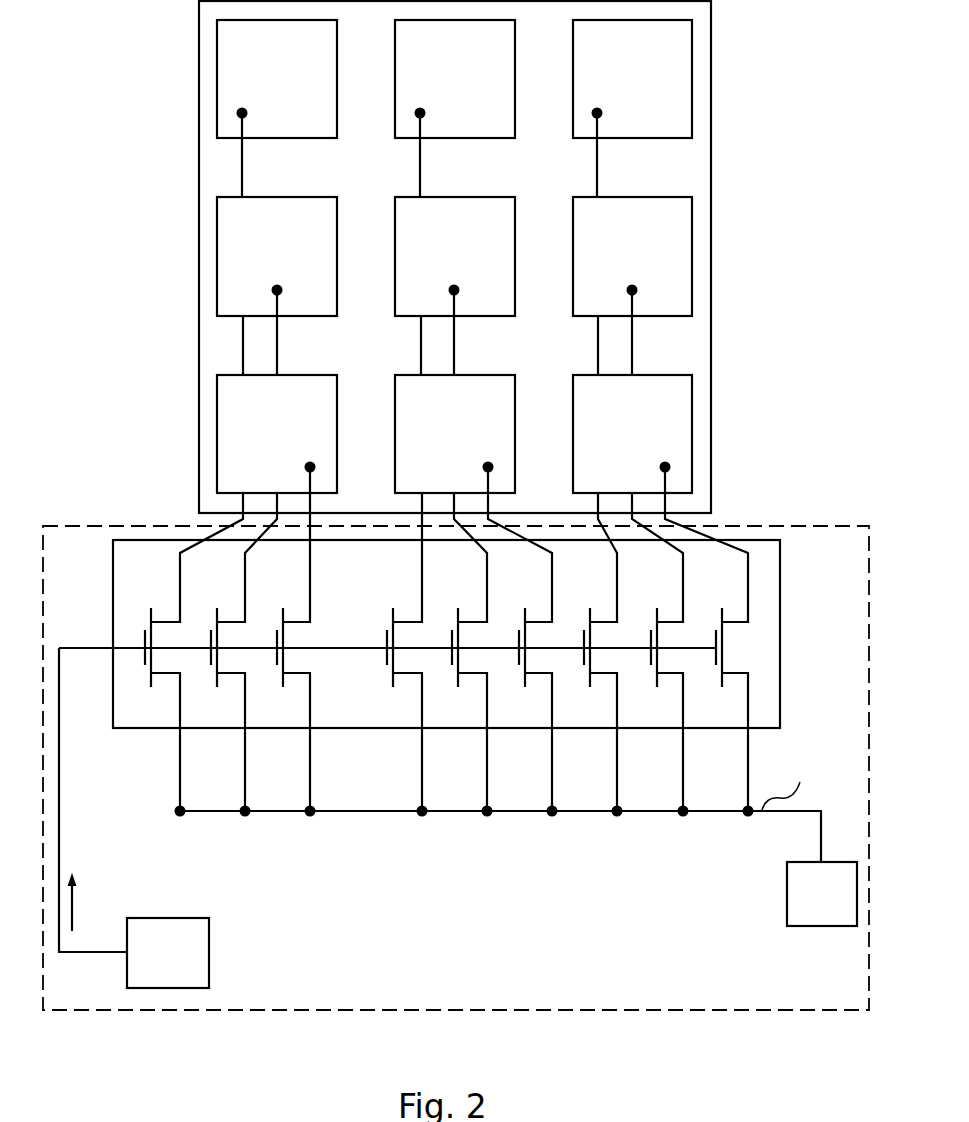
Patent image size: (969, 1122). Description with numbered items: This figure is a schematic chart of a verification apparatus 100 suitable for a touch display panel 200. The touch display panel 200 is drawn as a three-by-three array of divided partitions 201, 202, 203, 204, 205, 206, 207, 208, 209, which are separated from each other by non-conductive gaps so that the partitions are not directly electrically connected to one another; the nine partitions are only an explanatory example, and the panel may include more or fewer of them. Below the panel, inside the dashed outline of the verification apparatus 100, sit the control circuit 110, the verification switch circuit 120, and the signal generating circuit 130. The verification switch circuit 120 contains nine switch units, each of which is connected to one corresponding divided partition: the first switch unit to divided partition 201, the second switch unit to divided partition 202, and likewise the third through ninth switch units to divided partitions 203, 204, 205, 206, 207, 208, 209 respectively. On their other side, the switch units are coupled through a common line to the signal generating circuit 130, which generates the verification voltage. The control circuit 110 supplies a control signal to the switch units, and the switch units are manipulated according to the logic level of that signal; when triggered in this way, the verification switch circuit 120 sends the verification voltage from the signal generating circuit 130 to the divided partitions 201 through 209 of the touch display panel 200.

The verification apparatus 100 is at (760, 521).
The control circuit 110 is at (146, 967).
The verification switch circuit 120 is at (767, 698).
The signal generating circuit 130 is at (800, 907).
The touch display panel 200 is at (697, 353).
The divided partition 201 is at (256, 72).
The divided partition 202 is at (256, 250).
The divided partition 203 is at (256, 427).
The divided partition 204 is at (434, 72).
The divided partition 205 is at (434, 250).
The divided partition 206 is at (434, 427).
The divided partition 207 is at (611, 72).
The divided partition 208 is at (611, 250).
The divided partition 209 is at (611, 427).